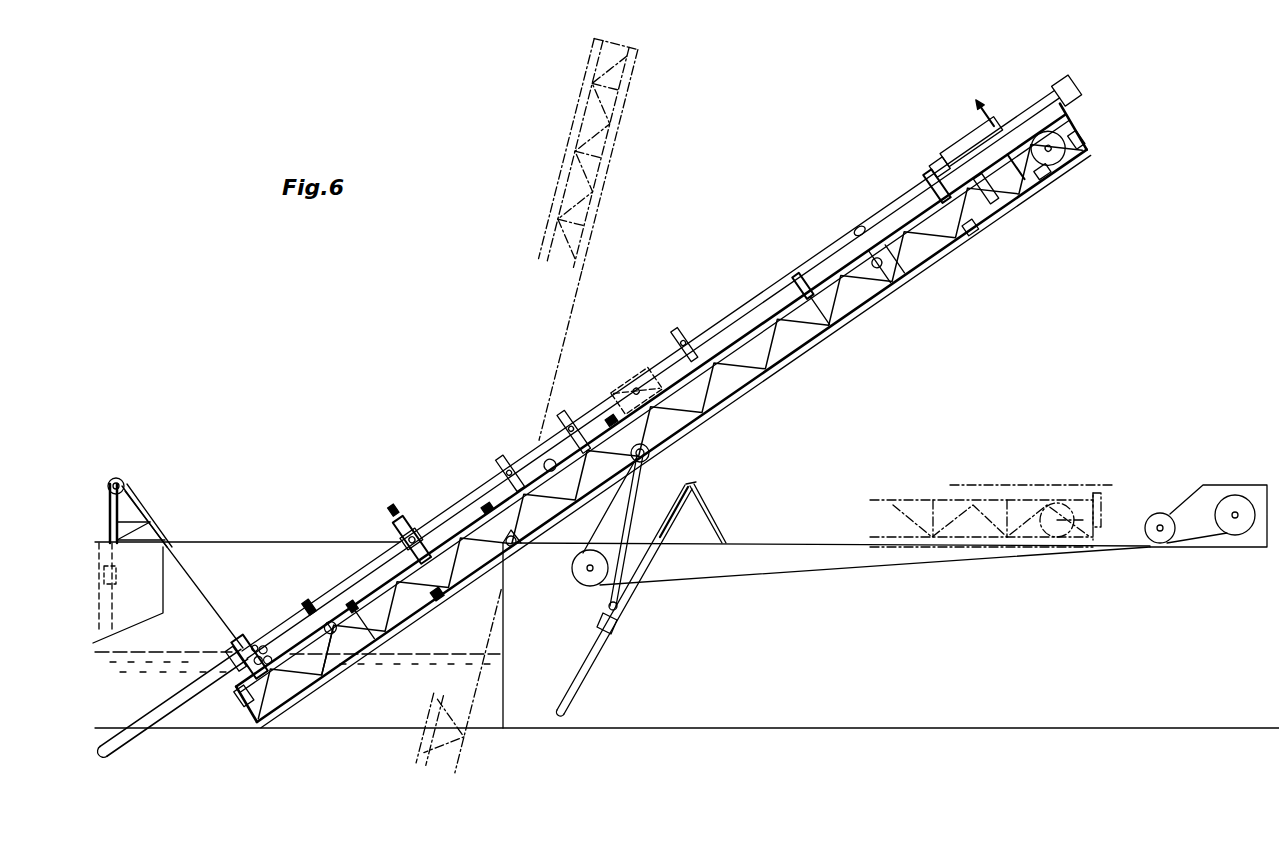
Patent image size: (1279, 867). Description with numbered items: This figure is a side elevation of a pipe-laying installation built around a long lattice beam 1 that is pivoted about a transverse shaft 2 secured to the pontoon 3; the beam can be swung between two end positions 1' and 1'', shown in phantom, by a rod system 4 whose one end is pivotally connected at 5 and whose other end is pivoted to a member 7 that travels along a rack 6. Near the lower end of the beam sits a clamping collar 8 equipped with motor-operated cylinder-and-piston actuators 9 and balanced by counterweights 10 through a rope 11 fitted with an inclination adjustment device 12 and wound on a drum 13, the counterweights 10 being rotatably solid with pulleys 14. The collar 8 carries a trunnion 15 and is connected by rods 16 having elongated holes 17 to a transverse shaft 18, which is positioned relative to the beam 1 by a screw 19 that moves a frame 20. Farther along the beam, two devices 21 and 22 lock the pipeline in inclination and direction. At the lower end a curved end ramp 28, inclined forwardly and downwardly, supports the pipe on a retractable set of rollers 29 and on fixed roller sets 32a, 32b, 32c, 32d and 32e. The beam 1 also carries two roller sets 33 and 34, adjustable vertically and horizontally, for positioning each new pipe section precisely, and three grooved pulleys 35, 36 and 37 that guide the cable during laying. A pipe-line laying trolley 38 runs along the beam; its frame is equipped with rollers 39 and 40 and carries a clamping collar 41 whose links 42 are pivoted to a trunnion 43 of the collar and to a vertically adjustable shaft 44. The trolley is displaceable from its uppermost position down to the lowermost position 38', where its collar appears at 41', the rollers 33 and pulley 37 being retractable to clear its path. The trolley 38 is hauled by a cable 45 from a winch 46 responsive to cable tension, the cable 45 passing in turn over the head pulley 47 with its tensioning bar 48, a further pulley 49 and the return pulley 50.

The beam 1 is at (658, 408).
The end position of beam 1' is at (991, 498).
The end position of beam 1'' is at (535, 406).
The transverse shaft 2 is at (513, 550).
The pontoon 3 is at (687, 665).
The rod system 4 is at (627, 508).
The pivot connection 5 is at (650, 453).
The rack 6 is at (650, 569).
The member movable along rack 7 is at (620, 623).
The clamping collar 8 is at (260, 636).
The motor-operated cylinder-and-piston actuators 9 is at (215, 673).
The counterweights 10 is at (116, 576).
The rope 11 is at (202, 582).
The inclination adjustment device 12 is at (241, 627).
The drum 13 is at (121, 478).
The pulleys 14 is at (128, 487).
The trunnion 15 is at (238, 657).
The rods 16 is at (309, 672).
The elongated holes 17 is at (397, 516).
The transverse shaft 18 is at (426, 530).
The screw 19 is at (396, 512).
The frame 20 is at (408, 520).
The locking device 21 is at (500, 460).
The locking device 22 is at (560, 416).
The curved end ramp 28 is at (283, 702).
The set of rollers 29 is at (240, 698).
The set of rollers 32a is at (298, 606).
The set of rollers 32b is at (354, 603).
The set of rollers 32c is at (438, 592).
The set of rollers 32d is at (487, 504).
The set of rollers 32e is at (612, 410).
The set of rollers 33 is at (808, 290).
The set of rollers 34 is at (1063, 97).
The grooved pulley 35 is at (334, 636).
The grooved pulley 36 is at (540, 454).
The grooved pulley 37 is at (862, 236).
The pipe line laying trolley 38 is at (1006, 202).
The lowermost position of laying trolley 38' is at (693, 325).
The rollers 39 is at (960, 228).
The rollers 40 is at (1040, 176).
The clamping collar 41 is at (916, 177).
The clamping collar in lowermost trolley position 41' is at (637, 367).
The links 42 is at (955, 150).
The trunnion 43 is at (940, 165).
The vertically adjustable shaft 44 is at (985, 130).
The cable 45 is at (871, 301).
The winch 46 is at (1192, 498).
The head pulley 47 is at (1063, 155).
The tensioning bar 48 is at (1086, 141).
The pulley 49 is at (644, 462).
The return pulley 50 is at (581, 582).